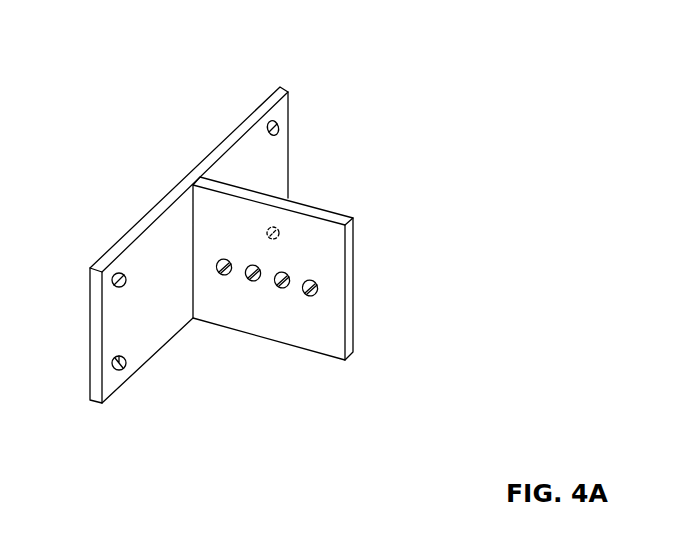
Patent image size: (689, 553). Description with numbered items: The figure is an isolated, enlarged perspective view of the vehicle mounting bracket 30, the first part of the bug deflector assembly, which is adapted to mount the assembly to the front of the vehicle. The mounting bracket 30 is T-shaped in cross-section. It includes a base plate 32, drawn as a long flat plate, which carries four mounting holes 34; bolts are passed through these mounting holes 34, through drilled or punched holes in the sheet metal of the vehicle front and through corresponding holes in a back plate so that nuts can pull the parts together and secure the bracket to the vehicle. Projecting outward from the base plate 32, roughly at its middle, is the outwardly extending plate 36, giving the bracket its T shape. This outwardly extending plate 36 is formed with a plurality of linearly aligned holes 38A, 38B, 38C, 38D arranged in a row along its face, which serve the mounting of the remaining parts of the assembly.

The vehicle mounting bracket 30 is at (274, 243).
The base plate 32 is at (228, 167).
The mounting holes 34 is at (124, 276).
The outwardly extending plate 36 is at (330, 253).
The linearly aligned hole 38A is at (220, 272).
The linearly aligned hole 38B is at (250, 280).
The linearly aligned hole 38C is at (280, 287).
The linearly aligned hole 38D is at (308, 296).